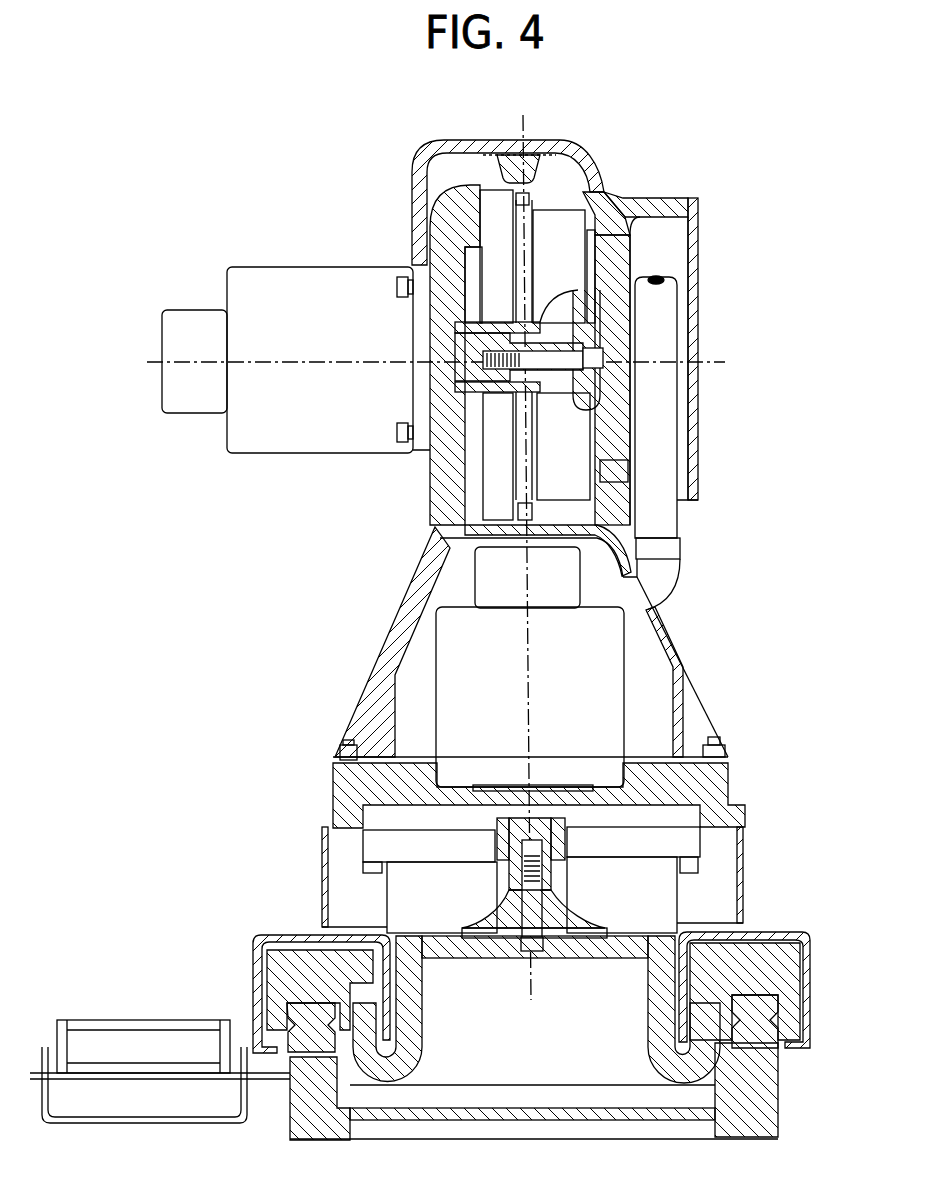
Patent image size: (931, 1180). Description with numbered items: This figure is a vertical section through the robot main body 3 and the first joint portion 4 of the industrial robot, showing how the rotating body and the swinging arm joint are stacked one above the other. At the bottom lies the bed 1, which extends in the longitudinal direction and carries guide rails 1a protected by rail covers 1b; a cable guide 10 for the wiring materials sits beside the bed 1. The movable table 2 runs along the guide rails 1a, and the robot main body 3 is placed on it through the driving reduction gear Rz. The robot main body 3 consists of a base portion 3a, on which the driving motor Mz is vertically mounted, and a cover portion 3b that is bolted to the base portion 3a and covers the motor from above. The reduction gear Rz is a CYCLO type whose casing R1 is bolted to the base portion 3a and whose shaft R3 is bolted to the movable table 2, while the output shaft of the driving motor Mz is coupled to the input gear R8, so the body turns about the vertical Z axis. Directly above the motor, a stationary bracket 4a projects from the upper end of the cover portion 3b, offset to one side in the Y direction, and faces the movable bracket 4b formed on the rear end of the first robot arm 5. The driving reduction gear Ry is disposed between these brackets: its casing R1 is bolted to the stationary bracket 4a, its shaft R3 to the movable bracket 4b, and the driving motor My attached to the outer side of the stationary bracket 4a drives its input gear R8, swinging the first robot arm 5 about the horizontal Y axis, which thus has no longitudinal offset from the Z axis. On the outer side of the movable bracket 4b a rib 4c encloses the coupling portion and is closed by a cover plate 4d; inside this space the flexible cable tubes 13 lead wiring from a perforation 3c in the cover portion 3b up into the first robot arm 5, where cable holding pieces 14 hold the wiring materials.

The bed 1 is at (762, 1110).
The guide rails 1a is at (300, 1012).
The rail covers 1b is at (265, 930).
The movable table 2 is at (612, 945).
The robot main body 3 is at (332, 730).
The base portion 3a is at (345, 793).
The cover portion 3b is at (400, 628).
The perforation 3c is at (665, 610).
The first joint portion 4 is at (703, 307).
The stationary bracket 4a is at (445, 227).
The movable bracket 4b is at (620, 387).
The rib 4c is at (665, 208).
The cover plate 4d is at (690, 248).
The first robot arm 5 is at (425, 148).
The cable guide 10 is at (96, 1022).
The flexible cable tubes 13 is at (667, 430).
The cable holding pieces 14 is at (548, 158).
The driving motor My is at (278, 277).
The driving motor Mz is at (612, 718).
The casing R1 is at (490, 200).
The shaft R3 is at (610, 470).
The input gear R8 is at (540, 392).
The driving reduction gear Ry is at (567, 223).
The driving reduction gear Rz is at (668, 897).
The Y axis Y is at (718, 358).
The Z axis Z is at (524, 130).